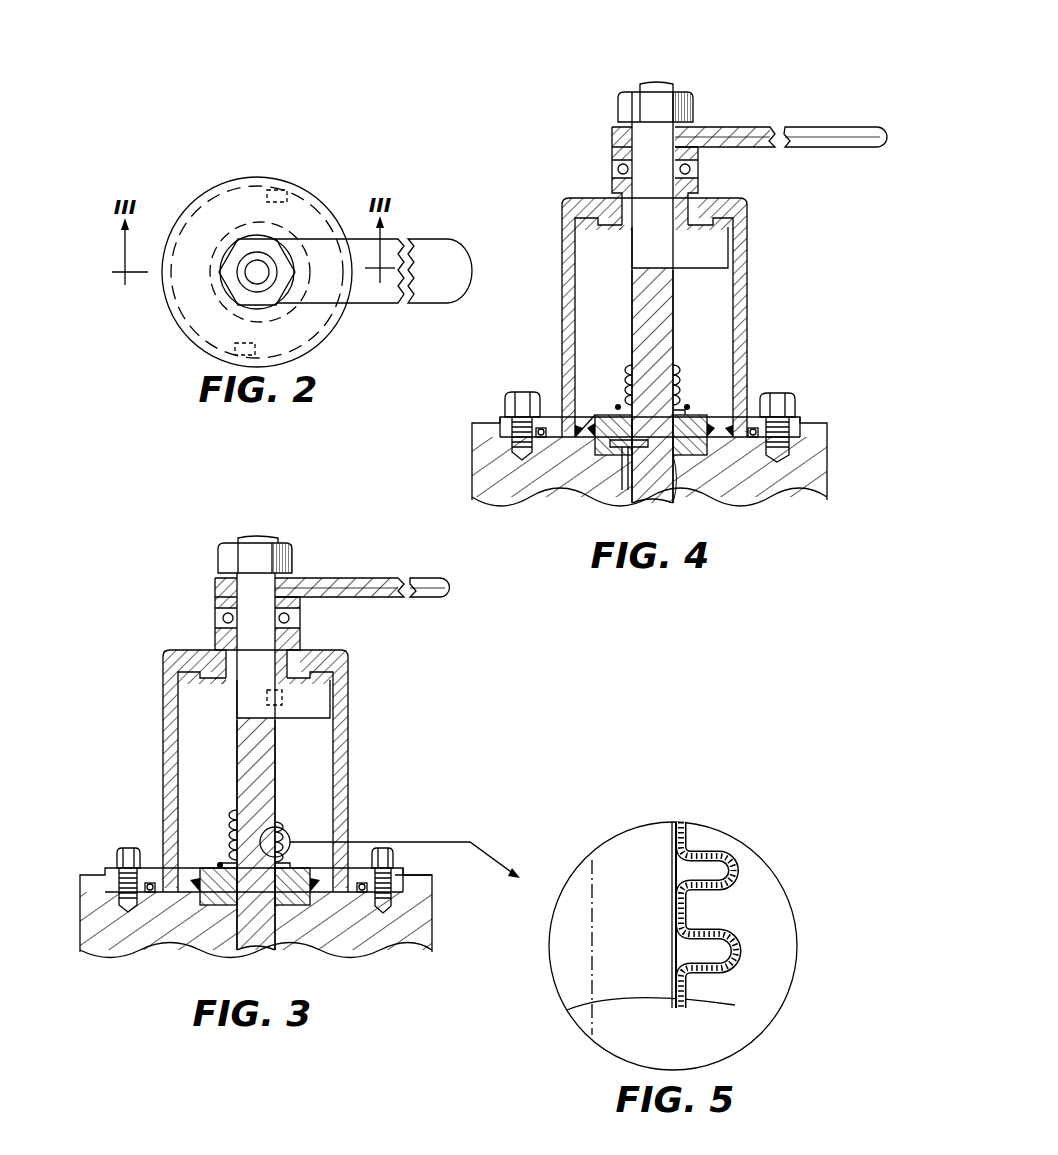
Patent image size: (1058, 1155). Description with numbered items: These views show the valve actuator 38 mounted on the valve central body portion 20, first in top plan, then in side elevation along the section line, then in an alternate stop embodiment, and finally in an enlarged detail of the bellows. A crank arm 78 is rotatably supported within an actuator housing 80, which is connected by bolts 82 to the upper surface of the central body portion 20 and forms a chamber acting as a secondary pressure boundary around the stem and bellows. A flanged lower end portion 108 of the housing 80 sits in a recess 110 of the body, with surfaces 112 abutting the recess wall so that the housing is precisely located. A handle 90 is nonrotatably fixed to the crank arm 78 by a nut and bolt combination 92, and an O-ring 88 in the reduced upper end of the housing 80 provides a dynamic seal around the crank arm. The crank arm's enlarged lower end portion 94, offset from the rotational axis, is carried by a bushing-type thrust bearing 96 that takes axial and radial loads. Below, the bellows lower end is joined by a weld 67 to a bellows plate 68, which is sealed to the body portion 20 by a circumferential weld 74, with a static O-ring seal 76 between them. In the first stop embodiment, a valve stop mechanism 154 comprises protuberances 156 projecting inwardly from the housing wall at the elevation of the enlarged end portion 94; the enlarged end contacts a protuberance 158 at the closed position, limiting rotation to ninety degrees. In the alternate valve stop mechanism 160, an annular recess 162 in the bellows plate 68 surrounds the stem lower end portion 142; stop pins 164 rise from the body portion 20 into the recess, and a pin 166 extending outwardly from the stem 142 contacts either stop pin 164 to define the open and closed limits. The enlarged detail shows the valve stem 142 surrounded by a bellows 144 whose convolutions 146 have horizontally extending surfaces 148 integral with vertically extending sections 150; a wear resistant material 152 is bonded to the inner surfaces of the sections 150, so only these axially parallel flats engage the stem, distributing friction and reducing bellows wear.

In FIG. 4, the valve central body portion 20 is at (475, 440).
In FIG. 3, the valve central body portion 20 is at (83, 900).
In FIG. 4, the actuator 38 is at (703, 92).
In FIG. 3, the actuator 38 is at (322, 560).
In FIG. 4, the weld 67 is at (686, 406).
In FIG. 3, the weld 67 is at (284, 860).
In FIG. 4, the bellows plate 68 is at (697, 412).
In FIG. 3, the bellows plate 68 is at (298, 896).
In FIG. 4, the circumferential weld 74 is at (719, 428).
In FIG. 3, the circumferential weld 74 is at (198, 880).
In FIG. 4, the static O-ring seal 76 is at (753, 438).
In FIG. 3, the static O-ring seal 76 is at (365, 893).
In FIG. 2, the crank arm 78 is at (250, 272).
In FIG. 4, the crank arm 78 is at (650, 148).
In FIG. 3, the crank arm 78 is at (250, 595).
In FIG. 2, the actuator housing 80 is at (328, 318).
In FIG. 4, the actuator housing 80 is at (558, 310).
In FIG. 3, the actuator housing 80 is at (165, 695).
In FIG. 4, the bolts 82 is at (518, 392).
In FIG. 3, the bolts 82 is at (380, 852).
In FIG. 4, the O-ring 88 is at (618, 168).
In FIG. 3, the O-ring 88 is at (285, 610).
In FIG. 2, the handle 90 is at (437, 243).
In FIG. 4, the handle 90 is at (828, 128).
In FIG. 3, the handle 90 is at (378, 580).
In FIG. 2, the nut and bolt combination 92 is at (247, 252).
In FIG. 4, the nut and bolt combination 92 is at (626, 92).
In FIG. 3, the nut and bolt combination 92 is at (228, 552).
In FIG. 4, the enlarged lower end portion 94 is at (668, 270).
In FIG. 3, the enlarged lower end portion 94 is at (243, 692).
In FIG. 4, the bushing-type thrust bearing 96 is at (612, 193).
In FIG. 3, the bushing-type thrust bearing 96 is at (233, 645).
In FIG. 4, the flanged lower end portion 108 is at (503, 426).
In FIG. 3, the flanged lower end portion 108 is at (113, 885).
In FIG. 4, the recess 110 is at (797, 437).
In FIG. 3, the recess 110 is at (404, 878).
In FIG. 4, the surfaces 112 is at (797, 428).
In FIG. 3, the surfaces 112 is at (401, 878).
In FIG. 4, the valve stem 142 is at (652, 382).
In FIG. 3, the valve stem 142 is at (255, 825).
In FIG. 5, the valve stem 142 is at (626, 843).
In FIG. 3, the bellows 144 is at (219, 826).
In FIG. 5, the bellows 144 is at (742, 898).
In FIG. 4, the convolutions 146 is at (628, 378).
In FIG. 3, the convolutions 146 is at (225, 850).
In FIG. 5, the convolutions 146 is at (740, 870).
In FIG. 5, the horizontally extending surfaces 148 is at (708, 852).
In FIG. 5, the vertically extending sections 150 is at (690, 828).
In FIG. 5, the wear resistant material 152 is at (672, 840).
In FIG. 3, the valve stop mechanism 154 is at (316, 727).
In FIG. 2, the protuberances 156 is at (290, 192).
In FIG. 3, the protuberances 156 is at (267, 704).
In FIG. 2, the protuberances 158 is at (190, 332).
In FIG. 4, the valve stop mechanism 160 is at (592, 462).
In FIG. 4, the annular recess 162 is at (668, 445).
In FIG. 4, the stop pins 164 is at (612, 453).
In FIG. 4, the pin 166 is at (614, 420).